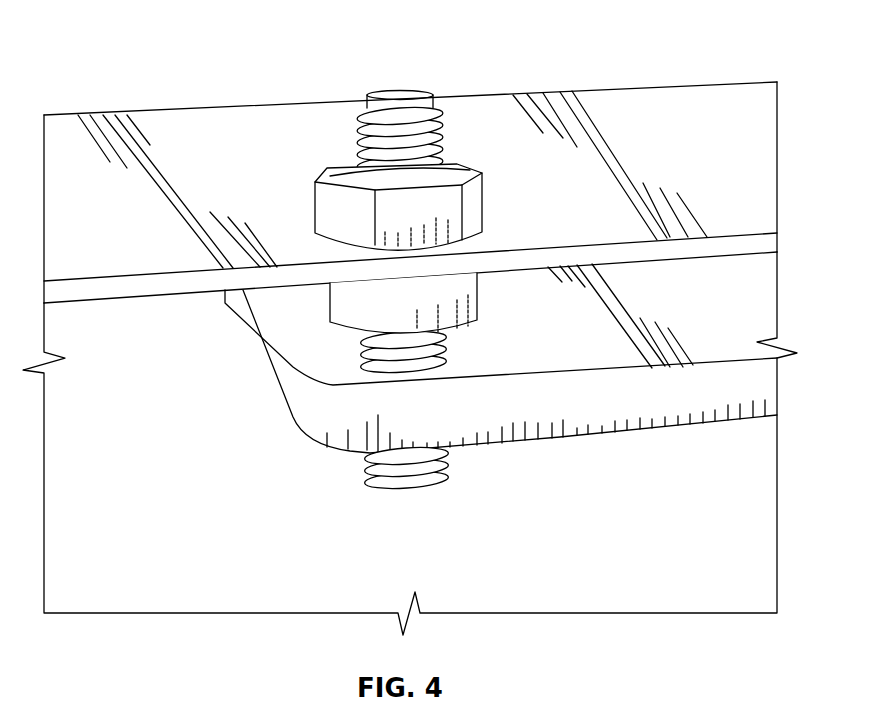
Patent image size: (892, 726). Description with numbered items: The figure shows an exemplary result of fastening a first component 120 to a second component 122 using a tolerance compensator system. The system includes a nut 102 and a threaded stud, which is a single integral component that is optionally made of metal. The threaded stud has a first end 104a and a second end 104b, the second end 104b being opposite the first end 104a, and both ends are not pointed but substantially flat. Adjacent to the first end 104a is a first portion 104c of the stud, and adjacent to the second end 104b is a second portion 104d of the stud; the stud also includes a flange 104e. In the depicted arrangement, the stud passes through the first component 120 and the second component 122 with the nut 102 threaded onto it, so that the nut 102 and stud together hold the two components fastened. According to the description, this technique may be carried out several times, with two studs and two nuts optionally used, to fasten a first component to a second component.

The nut 102 is at (473, 208).
The first end 104a is at (405, 489).
The second end 104b is at (398, 92).
The first portion 104c is at (457, 332).
The second portion 104d is at (305, 95).
The flange 104e is at (473, 293).
The first component 120 is at (765, 388).
The second component 122 is at (765, 240).